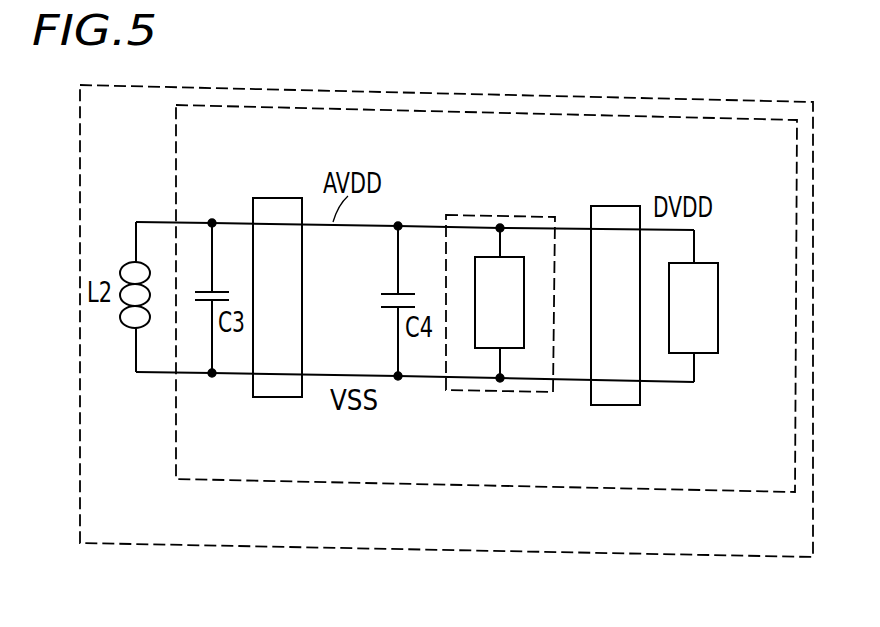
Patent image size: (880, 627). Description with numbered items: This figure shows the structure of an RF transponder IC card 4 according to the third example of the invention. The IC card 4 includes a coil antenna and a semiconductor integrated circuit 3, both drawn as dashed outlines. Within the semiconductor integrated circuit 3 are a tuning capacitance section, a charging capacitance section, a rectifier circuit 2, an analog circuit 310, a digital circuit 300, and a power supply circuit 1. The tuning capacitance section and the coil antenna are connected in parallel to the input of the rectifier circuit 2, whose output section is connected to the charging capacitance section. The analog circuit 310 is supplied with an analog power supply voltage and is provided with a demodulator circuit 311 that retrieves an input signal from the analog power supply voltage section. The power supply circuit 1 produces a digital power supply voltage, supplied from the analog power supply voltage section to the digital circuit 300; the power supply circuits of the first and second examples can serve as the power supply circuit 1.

The power supply circuit 1 is at (620, 408).
The rectifier circuit 2 is at (276, 197).
The semiconductor integrated circuit 3 is at (177, 480).
The RF transponder IC card 4 is at (137, 543).
The digital circuit 300 is at (716, 353).
The analog circuit 310 is at (477, 392).
The demodulator circuit 311 is at (508, 257).